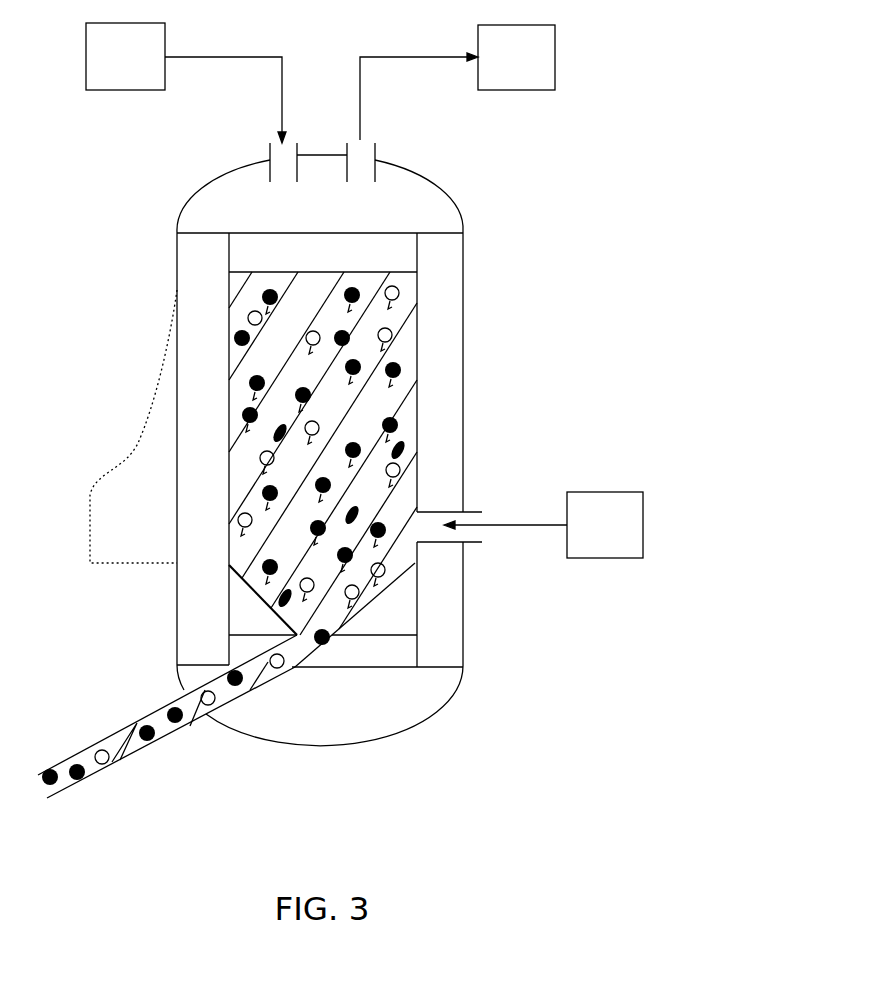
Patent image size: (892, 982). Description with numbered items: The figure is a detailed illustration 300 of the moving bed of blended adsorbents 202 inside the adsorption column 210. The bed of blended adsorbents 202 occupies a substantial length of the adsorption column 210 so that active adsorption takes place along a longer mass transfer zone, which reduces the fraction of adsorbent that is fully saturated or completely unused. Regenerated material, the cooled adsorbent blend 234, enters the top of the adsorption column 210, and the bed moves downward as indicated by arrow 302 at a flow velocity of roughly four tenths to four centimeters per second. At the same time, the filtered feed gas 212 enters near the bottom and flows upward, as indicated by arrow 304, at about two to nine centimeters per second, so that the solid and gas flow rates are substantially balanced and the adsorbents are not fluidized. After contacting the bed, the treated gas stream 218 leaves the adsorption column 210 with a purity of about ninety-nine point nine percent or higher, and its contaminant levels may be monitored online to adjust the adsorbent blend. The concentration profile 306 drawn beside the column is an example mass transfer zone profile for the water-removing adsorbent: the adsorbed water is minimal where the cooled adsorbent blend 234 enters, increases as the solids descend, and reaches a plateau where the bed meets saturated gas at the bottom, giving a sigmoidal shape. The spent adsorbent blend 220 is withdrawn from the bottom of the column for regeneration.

The detailed illustration 300 is at (342, 885).
The adsorption column 210 is at (432, 182).
The moving bed of blended adsorbents 202 is at (379, 450).
The arrow 302 is at (405, 377).
The arrow 304 is at (405, 448).
The concentration profile 306 is at (132, 565).
The spent adsorbent blend 220 is at (80, 782).
The cooled adsorbent blend 234 is at (113, 65).
The treated gas stream 218 is at (504, 66).
The filtered feed gas 212 is at (593, 534).